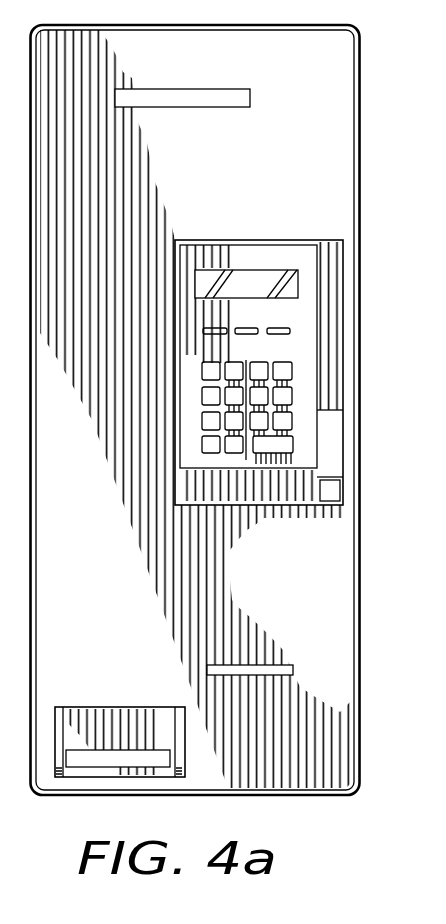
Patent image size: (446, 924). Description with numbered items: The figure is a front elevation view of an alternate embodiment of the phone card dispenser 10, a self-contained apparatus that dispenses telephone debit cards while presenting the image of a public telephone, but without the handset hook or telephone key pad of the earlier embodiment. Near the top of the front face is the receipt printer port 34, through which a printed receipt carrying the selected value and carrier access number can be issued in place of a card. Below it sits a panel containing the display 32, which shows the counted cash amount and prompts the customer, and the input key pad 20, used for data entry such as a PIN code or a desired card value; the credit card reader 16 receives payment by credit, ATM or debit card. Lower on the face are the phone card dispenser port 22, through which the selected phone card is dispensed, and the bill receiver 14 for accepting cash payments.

The phone card dispenser 10 is at (372, 66).
The bill receiver 14 is at (138, 740).
The credit card reader 16 is at (338, 443).
The input key pad 20 is at (212, 424).
The phone card dispenser port 22 is at (262, 671).
The display 32 is at (266, 285).
The receipt printer port 34 is at (188, 104).